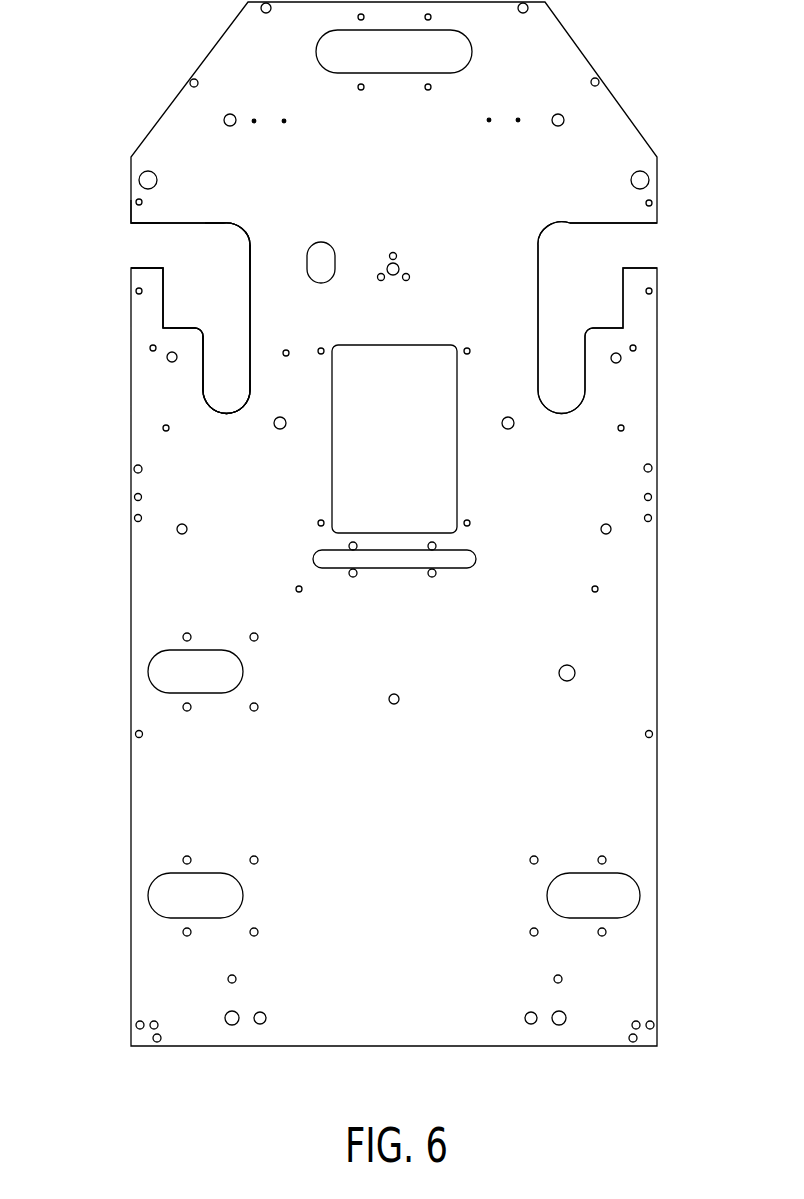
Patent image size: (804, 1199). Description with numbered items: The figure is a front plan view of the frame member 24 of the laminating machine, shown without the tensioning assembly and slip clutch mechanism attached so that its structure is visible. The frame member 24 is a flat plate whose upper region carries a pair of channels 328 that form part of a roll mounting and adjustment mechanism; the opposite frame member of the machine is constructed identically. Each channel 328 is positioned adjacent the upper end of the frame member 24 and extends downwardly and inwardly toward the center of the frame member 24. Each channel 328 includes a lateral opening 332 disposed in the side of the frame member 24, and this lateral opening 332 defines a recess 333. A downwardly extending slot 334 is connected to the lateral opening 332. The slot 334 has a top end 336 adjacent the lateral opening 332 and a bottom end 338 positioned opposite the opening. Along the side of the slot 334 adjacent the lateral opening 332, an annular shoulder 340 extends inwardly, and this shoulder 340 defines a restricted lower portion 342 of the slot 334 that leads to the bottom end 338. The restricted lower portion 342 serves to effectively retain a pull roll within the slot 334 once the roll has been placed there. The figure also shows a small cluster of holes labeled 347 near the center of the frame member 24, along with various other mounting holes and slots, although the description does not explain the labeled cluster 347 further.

The frame member 24 is at (149, 570).
The channel 328 is at (588, 310).
The lateral opening 332 is at (145, 224).
The recess 333 is at (147, 268).
The slot 334 is at (203, 238).
The top end 336 is at (227, 222).
The bottom end 338 is at (225, 413).
The annular shoulder 340 is at (204, 328).
The restricted lower portion 342 is at (227, 382).
The hole cluster 347 is at (398, 265).